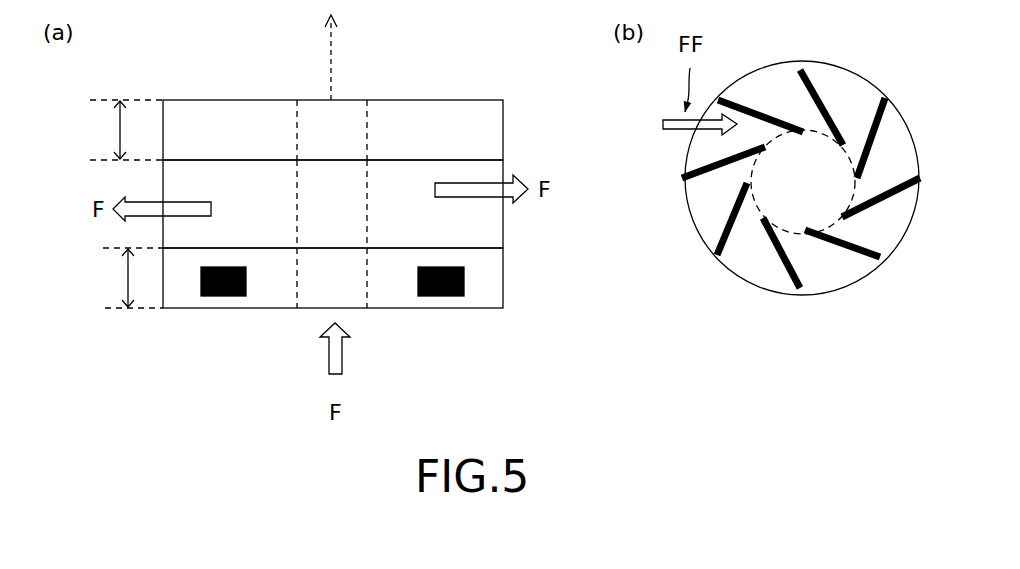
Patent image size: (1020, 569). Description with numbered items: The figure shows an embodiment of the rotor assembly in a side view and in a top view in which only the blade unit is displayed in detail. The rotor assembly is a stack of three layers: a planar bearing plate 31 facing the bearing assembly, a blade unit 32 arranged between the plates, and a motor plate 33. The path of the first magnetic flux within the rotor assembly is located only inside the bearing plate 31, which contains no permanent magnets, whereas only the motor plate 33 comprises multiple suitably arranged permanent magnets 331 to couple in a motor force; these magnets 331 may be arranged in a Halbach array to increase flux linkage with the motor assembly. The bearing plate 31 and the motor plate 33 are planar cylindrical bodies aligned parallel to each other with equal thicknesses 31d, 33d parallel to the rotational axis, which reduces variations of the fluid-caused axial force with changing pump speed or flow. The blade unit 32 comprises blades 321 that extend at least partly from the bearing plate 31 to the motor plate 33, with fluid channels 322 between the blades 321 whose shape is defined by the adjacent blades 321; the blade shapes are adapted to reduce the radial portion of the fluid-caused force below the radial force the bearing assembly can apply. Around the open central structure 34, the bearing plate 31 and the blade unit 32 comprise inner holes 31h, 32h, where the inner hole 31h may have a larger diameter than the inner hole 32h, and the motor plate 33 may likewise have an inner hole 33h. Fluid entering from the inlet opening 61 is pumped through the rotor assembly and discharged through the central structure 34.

The bearing plate 31 is at (505, 130).
The blade unit 32 is at (692, 235).
The motor plate 33 is at (508, 279).
The central structure 34 is at (352, 100).
The inner hole of the bearing plate 31h is at (352, 144).
The inner hole of the blade unit 32h is at (352, 219).
The inner hole of the motor plate 33h is at (352, 294).
The thickness of the bearing plate 31d is at (110, 130).
The thickness of the motor plate 33d is at (110, 278).
The permanent magnets 331 is at (224, 298).
The blades 321 is at (800, 272).
The fluid channels 322 is at (751, 245).
The inlet opening 61 is at (808, 180).